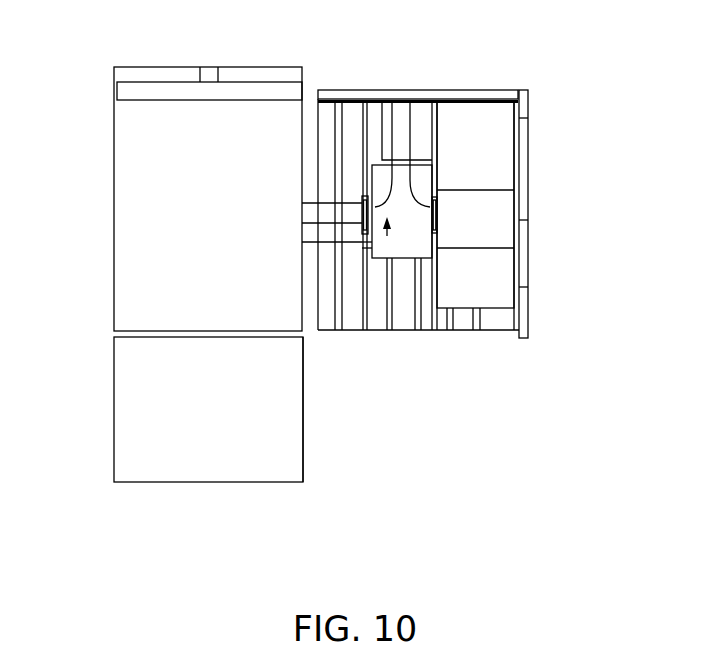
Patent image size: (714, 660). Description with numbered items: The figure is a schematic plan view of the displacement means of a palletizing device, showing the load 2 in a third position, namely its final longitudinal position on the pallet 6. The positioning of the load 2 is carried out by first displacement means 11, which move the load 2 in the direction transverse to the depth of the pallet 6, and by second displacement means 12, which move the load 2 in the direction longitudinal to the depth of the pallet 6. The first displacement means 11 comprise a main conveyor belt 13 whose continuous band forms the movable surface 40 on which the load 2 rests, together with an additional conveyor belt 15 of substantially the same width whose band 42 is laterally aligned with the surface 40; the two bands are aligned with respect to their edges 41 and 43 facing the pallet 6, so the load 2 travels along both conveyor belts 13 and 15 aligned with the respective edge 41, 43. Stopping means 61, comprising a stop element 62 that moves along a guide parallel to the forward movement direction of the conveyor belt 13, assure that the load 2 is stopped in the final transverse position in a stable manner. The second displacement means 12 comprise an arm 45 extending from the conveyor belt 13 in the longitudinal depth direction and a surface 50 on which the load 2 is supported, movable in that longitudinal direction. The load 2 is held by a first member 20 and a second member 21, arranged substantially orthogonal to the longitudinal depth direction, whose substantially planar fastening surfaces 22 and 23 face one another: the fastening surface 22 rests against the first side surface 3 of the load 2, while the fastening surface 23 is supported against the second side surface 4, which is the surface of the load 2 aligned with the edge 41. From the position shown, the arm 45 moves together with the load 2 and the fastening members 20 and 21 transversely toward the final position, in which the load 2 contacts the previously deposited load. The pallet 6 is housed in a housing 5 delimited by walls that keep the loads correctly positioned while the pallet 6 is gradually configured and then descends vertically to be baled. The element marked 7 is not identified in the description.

The load 2 is at (399, 252).
The first side surface 3 is at (303, 242).
The second side surface 4 is at (500, 248).
The housing 5 is at (525, 287).
The pallet 6 is at (487, 320).
The cover 7 is at (528, 108).
The first displacement means 11 is at (134, 121).
The second displacement means 12 is at (328, 203).
The conveyor belt 13 is at (157, 213).
The additional conveyor belt 15 is at (152, 430).
The first member 20 is at (362, 196).
The second member 21 is at (438, 207).
The fastening surface 22 is at (392, 108).
The fastening surface 23 is at (409, 104).
The surface 40 is at (158, 323).
The edge 41 is at (303, 297).
The band 42 is at (161, 383).
The edge 43 is at (303, 420).
The arm 45 is at (313, 213).
The surface 50 is at (315, 214).
The stopping means 61 is at (200, 82).
The stop element 62 is at (140, 89).